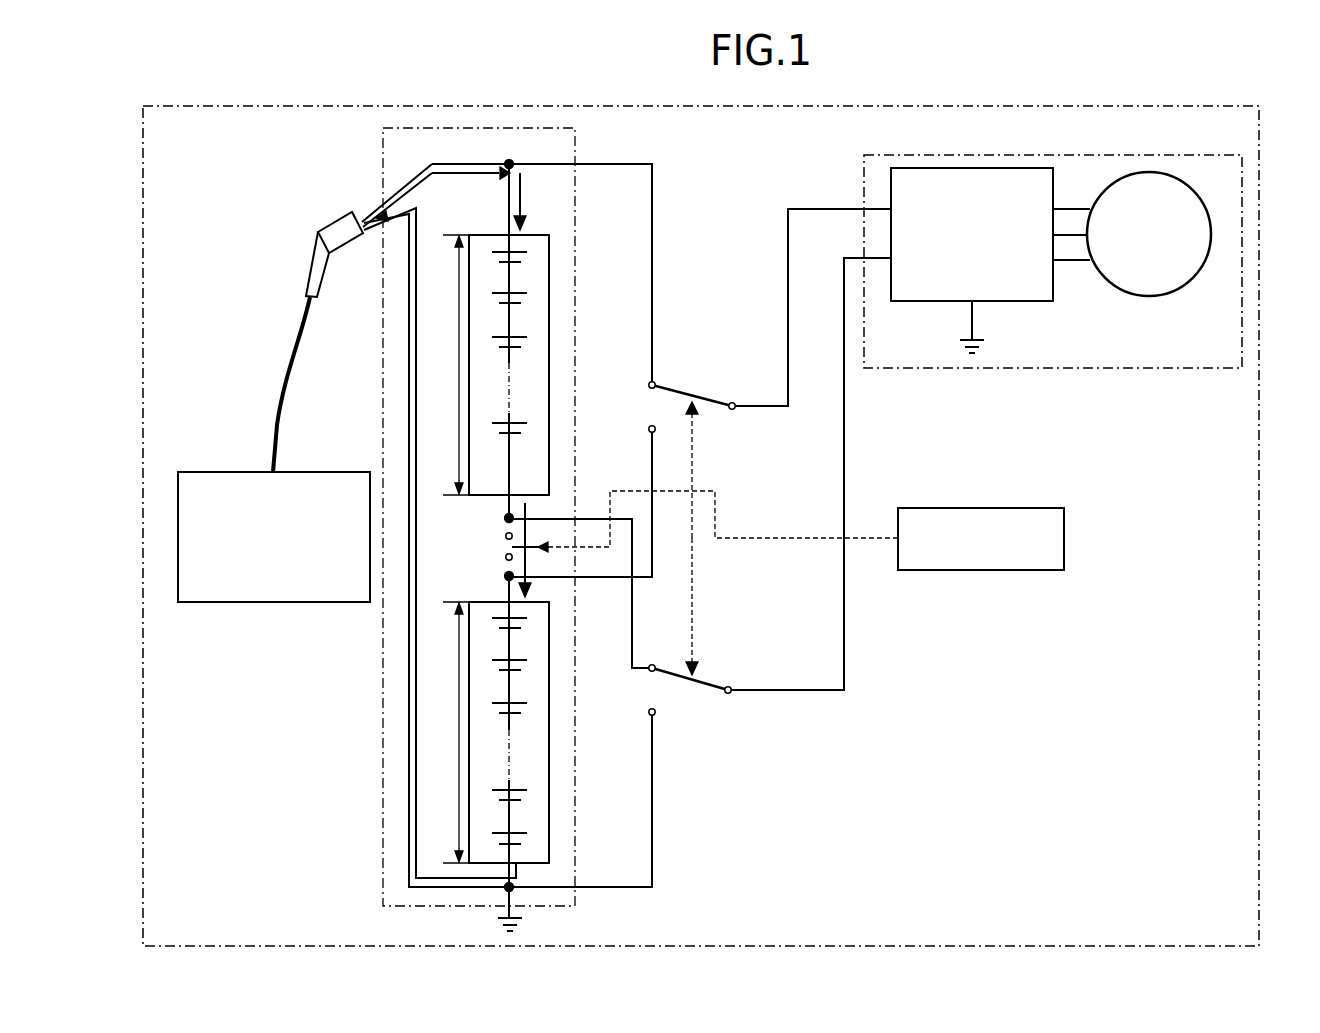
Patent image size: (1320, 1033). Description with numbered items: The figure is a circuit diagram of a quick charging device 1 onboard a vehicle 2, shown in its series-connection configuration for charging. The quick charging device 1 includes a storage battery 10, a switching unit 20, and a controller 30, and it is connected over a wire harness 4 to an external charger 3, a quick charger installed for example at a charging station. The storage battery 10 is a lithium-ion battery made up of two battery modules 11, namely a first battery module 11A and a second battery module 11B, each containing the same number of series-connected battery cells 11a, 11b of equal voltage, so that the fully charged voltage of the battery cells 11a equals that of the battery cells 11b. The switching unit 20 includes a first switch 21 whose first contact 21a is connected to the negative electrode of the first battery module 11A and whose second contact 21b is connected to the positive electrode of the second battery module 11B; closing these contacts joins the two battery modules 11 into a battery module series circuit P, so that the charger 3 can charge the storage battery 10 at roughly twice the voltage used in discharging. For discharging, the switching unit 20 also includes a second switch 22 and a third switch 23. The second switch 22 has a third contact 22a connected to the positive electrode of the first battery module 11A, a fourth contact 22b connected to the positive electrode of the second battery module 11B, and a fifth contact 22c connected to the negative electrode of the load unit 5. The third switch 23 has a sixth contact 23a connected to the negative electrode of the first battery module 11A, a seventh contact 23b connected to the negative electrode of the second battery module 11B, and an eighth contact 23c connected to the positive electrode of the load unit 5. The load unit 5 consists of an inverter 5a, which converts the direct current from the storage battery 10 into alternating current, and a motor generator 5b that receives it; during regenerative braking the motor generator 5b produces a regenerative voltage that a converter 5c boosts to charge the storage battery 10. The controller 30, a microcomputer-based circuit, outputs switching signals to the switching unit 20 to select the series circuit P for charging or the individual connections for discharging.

The quick charging device 1 is at (701, 204).
The vehicle 2 is at (798, 108).
The charger 3 is at (322, 470).
The wire harness 4 is at (456, 154).
The load unit 5 is at (1053, 291).
The inverter 5a is at (986, 260).
The motor generator 5b is at (1143, 296).
The converter 5c is at (973, 237).
The storage battery 10 is at (574, 547).
The battery module 11 is at (595, 549).
The first battery module 11A is at (554, 365).
The second battery module 11B is at (595, 732).
The battery cells 11a is at (520, 252).
The battery cells 11b is at (520, 618).
The switching unit 20 is at (605, 526).
The first switch 21 is at (434, 575).
The first contact 21a is at (505, 536).
The second contact 21b is at (478, 559).
The second switch 22 is at (678, 399).
The third contact 22a is at (652, 383).
The fourth contact 22b is at (648, 428).
The fifth contact 22c is at (732, 410).
The third switch 23 is at (678, 691).
The sixth contact 23a is at (650, 670).
The seventh contact 23b is at (650, 714).
The eighth contact 23c is at (728, 694).
The controller 30 is at (996, 508).
The battery module series circuit P is at (578, 136).